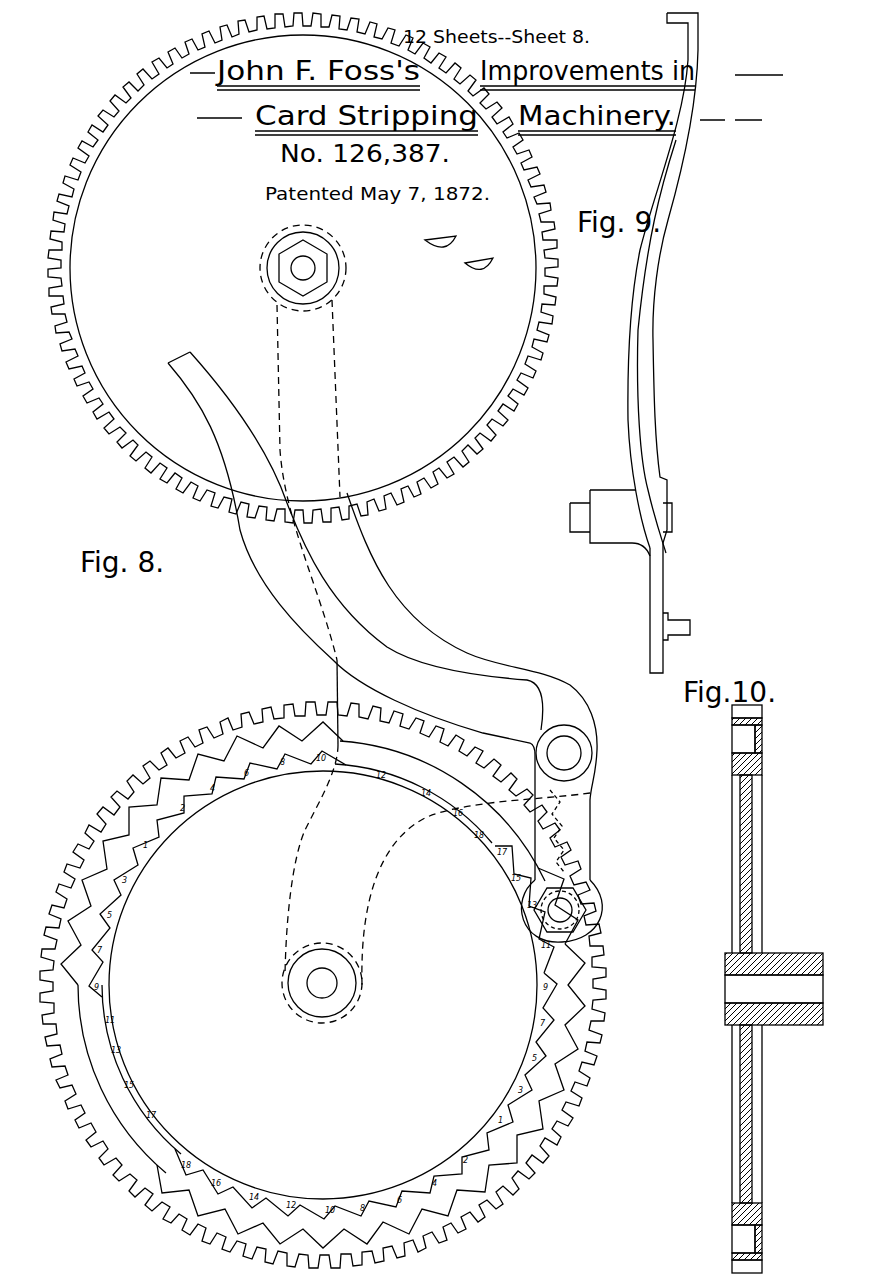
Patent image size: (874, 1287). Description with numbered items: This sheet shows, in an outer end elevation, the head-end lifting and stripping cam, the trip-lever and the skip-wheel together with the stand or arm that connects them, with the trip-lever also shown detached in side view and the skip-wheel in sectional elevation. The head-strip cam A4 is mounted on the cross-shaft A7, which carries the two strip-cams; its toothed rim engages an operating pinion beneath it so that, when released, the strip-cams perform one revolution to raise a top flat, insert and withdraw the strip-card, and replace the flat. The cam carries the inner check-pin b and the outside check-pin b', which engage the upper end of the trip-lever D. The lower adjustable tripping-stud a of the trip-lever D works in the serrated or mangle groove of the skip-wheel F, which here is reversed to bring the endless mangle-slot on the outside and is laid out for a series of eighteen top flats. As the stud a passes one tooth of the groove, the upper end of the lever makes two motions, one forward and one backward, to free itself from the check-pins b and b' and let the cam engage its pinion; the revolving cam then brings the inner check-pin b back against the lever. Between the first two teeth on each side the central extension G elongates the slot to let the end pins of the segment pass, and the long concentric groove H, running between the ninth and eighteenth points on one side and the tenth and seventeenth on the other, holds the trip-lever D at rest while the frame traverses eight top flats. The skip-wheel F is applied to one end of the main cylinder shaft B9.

In FIG. 8, the head-strip cam A4 is at (222, 193).
In FIG. 8, the cross-shaft A7 is at (303, 268).
In FIG. 8, the inner check-pin b is at (440, 234).
In FIG. 8, the outside check-pin b' is at (479, 255).
In FIG. 8, the trip-lever D is at (385, 647).
In FIG. 9, the trip-lever D is at (660, 281).
In FIG. 8, the tripping-stud a is at (560, 910).
In FIG. 9, the tripping-stud a is at (676, 626).
In FIG. 8, the skip-wheel F is at (323, 985).
In FIG. 8, the central extension G is at (323, 985).
In FIG. 8, the concentric groove H is at (323, 985).
In FIG. 8, the main cylinder shaft B9 is at (322, 983).